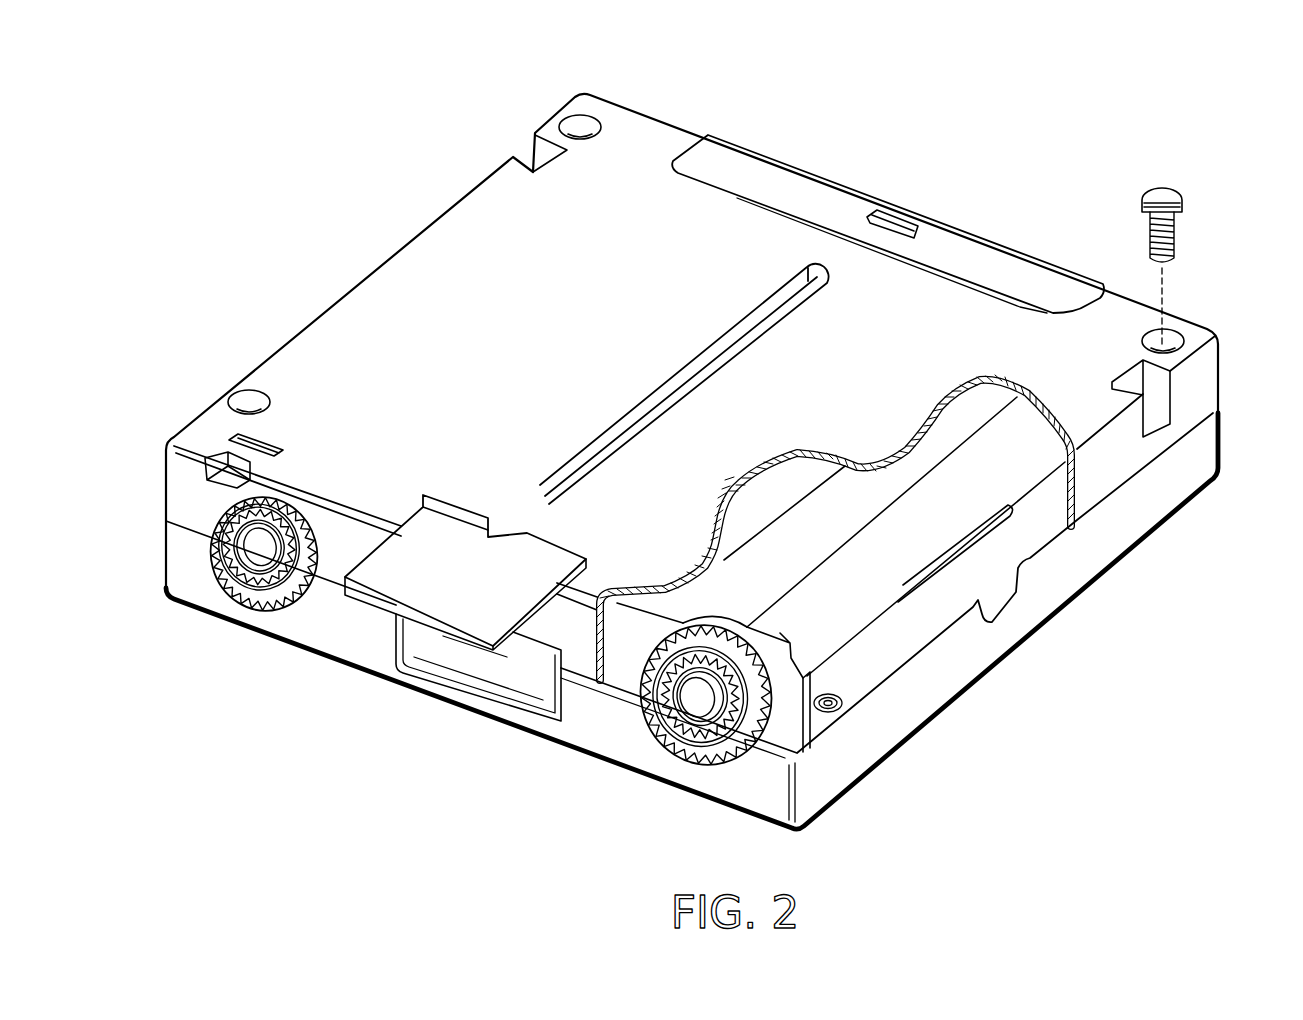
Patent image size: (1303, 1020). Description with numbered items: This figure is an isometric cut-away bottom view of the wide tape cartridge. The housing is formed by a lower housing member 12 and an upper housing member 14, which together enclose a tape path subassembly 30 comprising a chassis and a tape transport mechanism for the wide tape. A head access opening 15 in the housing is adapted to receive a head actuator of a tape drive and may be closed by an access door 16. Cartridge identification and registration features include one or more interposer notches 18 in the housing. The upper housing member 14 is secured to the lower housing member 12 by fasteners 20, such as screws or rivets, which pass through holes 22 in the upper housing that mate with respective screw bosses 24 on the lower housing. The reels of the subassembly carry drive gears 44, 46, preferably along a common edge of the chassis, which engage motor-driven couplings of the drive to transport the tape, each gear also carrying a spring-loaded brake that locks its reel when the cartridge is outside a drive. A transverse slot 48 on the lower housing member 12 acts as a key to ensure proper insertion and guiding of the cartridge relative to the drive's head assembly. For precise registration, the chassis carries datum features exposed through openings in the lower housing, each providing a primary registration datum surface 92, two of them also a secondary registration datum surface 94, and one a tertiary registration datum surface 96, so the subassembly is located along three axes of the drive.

The lower housing member 12 is at (352, 318).
The upper housing member 14 is at (803, 798).
The head access opening 15 is at (520, 656).
The access door 16 is at (384, 605).
The interposer notch 18 is at (530, 152).
The fastener 20 is at (1160, 185).
The hole 22 is at (577, 123).
The screw boss 24 is at (812, 690).
The tape path subassembly 30 is at (790, 728).
The drive gear 44 is at (680, 763).
The drive gear 46 is at (252, 600).
The transverse slot 48 is at (625, 420).
The primary registration datum surface 92 is at (895, 222).
The secondary registration datum surface 94 is at (205, 448).
The tertiary registration datum surface 96 is at (842, 698).